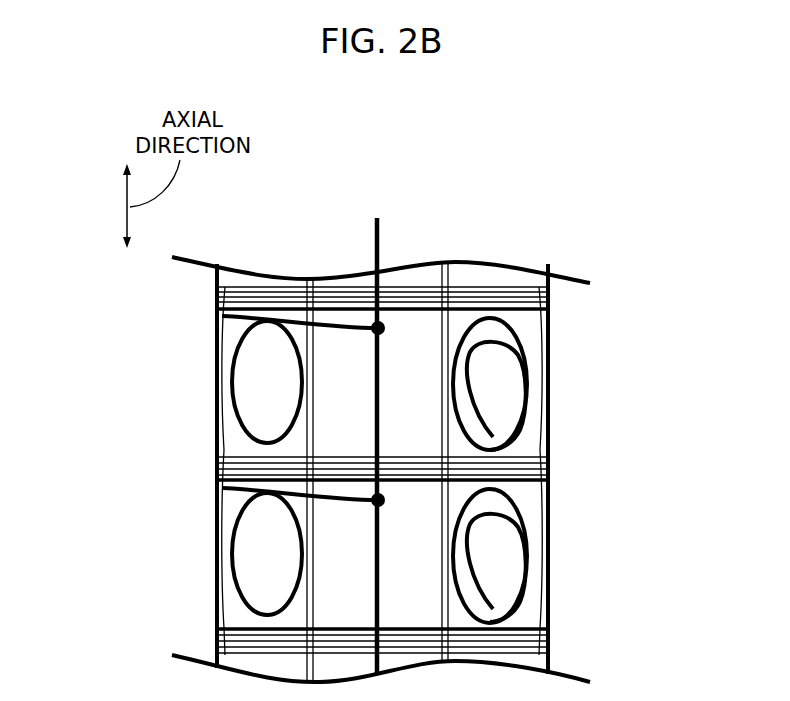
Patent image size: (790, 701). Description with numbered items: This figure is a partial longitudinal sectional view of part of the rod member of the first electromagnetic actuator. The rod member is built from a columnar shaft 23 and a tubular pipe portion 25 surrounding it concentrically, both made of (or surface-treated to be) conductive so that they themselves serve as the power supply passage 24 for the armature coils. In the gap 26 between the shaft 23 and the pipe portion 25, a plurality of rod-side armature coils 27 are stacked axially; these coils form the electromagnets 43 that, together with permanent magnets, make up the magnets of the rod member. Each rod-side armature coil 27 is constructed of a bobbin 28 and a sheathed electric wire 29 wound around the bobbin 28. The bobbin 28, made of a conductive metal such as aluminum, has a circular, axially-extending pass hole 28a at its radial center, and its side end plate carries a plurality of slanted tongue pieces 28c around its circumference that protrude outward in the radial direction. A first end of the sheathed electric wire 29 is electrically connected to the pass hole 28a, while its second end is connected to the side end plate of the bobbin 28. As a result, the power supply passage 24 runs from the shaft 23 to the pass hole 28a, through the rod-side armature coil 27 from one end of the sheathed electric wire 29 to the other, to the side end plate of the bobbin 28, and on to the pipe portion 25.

The shaft 23 is at (440, 285).
The power supply passage 24 is at (374, 258).
The pipe portion 25 is at (550, 306).
The gap 26 is at (490, 278).
The rod-side armature coil 27 is at (563, 470).
The electromagnet 43 is at (522, 333).
The bobbin 28 is at (214, 307).
The pass hole 28a is at (430, 263).
The tongue piece 28c is at (214, 317).
The sheathed electric wire 29 is at (388, 469).